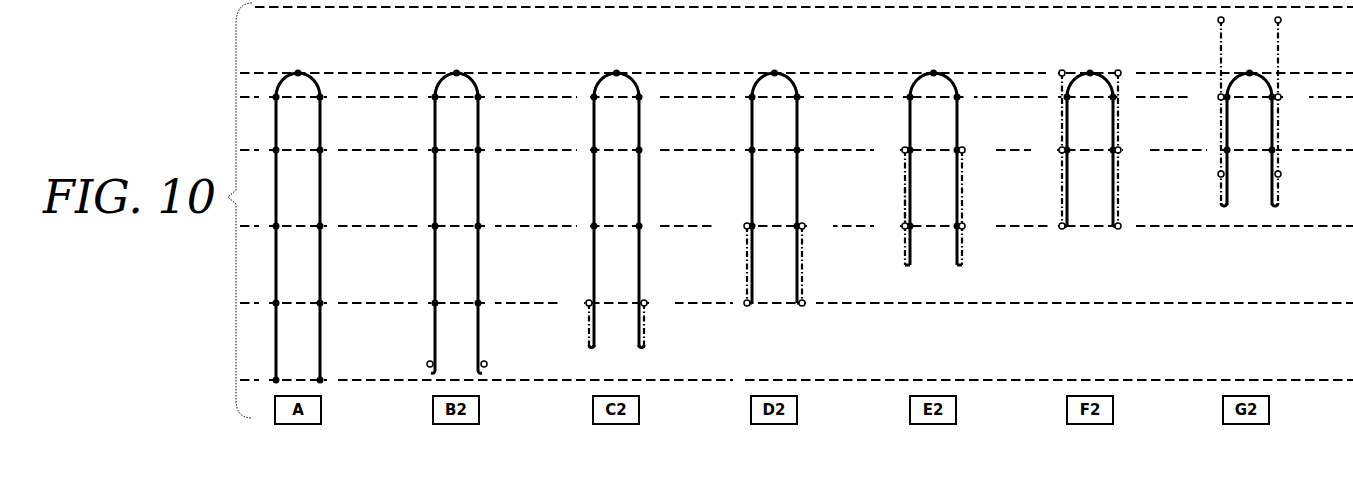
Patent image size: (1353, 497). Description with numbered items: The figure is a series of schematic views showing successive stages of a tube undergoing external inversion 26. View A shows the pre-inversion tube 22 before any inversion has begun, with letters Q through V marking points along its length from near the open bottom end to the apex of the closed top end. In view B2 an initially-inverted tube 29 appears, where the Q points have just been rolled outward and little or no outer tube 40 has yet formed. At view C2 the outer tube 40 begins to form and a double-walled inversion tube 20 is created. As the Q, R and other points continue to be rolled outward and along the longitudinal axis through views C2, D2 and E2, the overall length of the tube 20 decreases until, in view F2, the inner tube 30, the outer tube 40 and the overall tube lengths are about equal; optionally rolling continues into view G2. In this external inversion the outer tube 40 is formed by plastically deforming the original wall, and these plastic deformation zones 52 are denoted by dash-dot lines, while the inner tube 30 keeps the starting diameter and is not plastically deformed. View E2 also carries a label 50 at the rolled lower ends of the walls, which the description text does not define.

The pre-inversion tube 22 is at (337, 68).
The initially-inverted tube 29 is at (492, 68).
The double-walled inversion tube 20 is at (949, 197).
The external inversion 26 is at (616, 338).
The outer tube 40 is at (886, 207).
The plastic deformation zone 52 is at (903, 158).
The inner tube 30 is at (903, 187).
The connection 50 is at (910, 266).